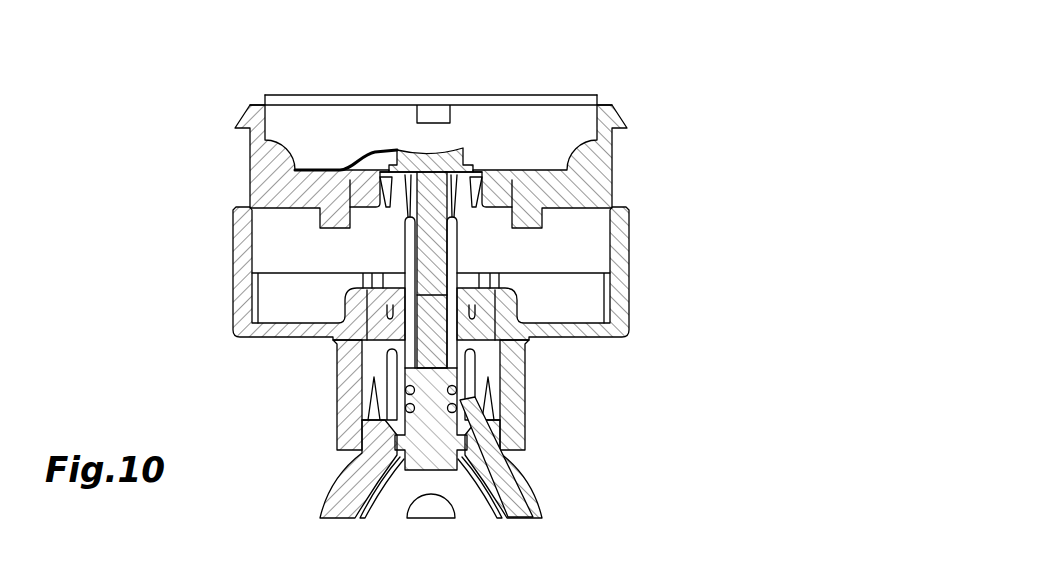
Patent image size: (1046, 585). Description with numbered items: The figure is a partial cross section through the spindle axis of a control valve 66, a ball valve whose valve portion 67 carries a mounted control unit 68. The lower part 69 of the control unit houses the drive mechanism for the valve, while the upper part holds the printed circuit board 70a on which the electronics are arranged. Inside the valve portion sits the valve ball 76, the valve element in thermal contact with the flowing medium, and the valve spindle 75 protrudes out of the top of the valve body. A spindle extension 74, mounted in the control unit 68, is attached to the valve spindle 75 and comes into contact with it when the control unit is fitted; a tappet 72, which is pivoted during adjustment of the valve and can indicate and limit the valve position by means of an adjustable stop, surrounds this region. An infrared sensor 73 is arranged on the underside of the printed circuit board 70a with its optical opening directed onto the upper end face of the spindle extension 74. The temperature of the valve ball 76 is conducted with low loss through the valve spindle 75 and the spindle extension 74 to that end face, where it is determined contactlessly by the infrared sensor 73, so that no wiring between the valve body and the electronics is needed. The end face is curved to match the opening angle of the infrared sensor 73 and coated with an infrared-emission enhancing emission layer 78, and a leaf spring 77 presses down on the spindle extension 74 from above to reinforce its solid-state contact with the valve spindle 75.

The control valve 66 is at (222, 382).
The valve portion 67 is at (518, 462).
The control unit 68 is at (210, 287).
The lower part 69 is at (240, 223).
The printed circuit board 70a is at (265, 96).
The tappet 72 is at (477, 327).
The infrared sensor 73 is at (450, 110).
The spindle extension 74 is at (440, 235).
The valve spindle 75 is at (440, 390).
The valve ball 76 is at (477, 497).
The leaf spring 77 is at (375, 150).
The emission layer 78 is at (414, 143).